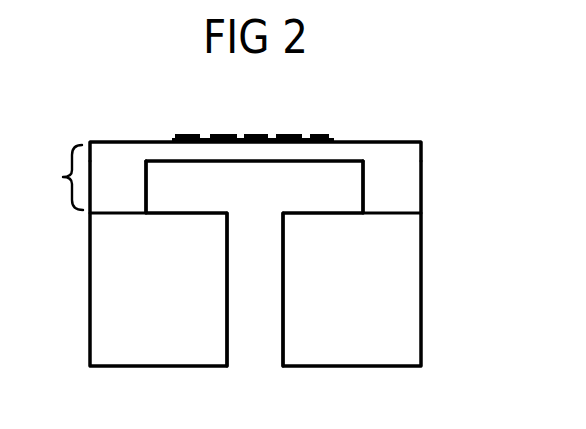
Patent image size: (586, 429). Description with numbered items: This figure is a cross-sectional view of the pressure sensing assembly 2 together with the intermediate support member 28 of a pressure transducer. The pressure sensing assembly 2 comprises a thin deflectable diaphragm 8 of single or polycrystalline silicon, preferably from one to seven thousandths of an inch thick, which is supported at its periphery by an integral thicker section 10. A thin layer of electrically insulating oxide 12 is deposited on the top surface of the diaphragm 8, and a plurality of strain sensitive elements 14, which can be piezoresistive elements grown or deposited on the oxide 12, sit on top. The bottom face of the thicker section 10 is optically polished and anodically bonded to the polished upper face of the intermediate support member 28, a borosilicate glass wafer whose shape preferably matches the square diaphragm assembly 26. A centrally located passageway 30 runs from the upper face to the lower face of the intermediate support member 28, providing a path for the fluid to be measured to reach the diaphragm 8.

The pressure sensing assembly 2 is at (63, 177).
The diaphragm 8 is at (160, 156).
The thicker section 10 is at (406, 182).
The electrically insulating oxide 12 is at (333, 140).
The strain sensitive elements 14 is at (203, 131).
The diaphragm assembly 26 is at (430, 131).
The intermediate support member 28 is at (395, 286).
The passageway 30 is at (255, 315).